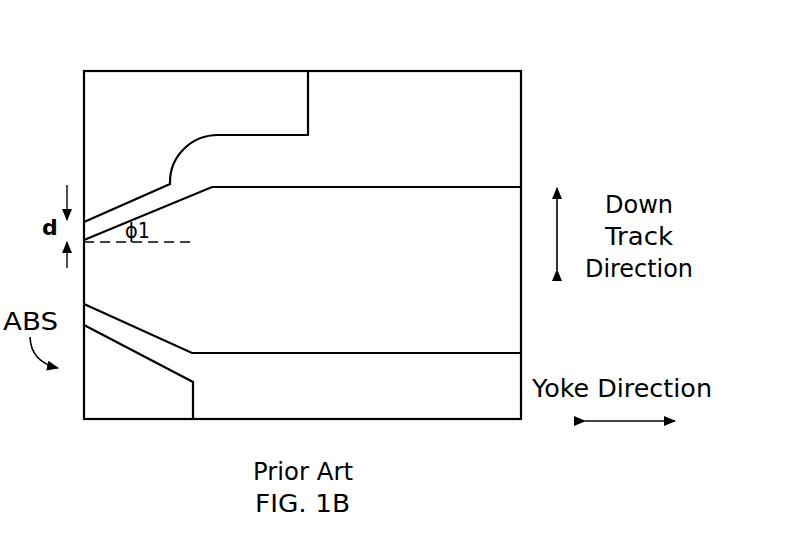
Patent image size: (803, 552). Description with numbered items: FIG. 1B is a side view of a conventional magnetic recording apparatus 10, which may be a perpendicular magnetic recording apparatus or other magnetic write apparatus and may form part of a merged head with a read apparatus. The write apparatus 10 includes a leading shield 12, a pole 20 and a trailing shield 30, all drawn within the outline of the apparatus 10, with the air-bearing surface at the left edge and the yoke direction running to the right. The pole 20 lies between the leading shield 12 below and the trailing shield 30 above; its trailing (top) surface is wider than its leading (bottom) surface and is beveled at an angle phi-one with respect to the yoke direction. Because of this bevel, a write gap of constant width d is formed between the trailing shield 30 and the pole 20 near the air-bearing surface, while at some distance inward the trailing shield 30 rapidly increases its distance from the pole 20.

The magnetic recording apparatus 10 is at (320, 32).
The trailing shield 30 is at (196, 146).
The pole 20 is at (302, 270).
The leading shield 12 is at (138, 372).